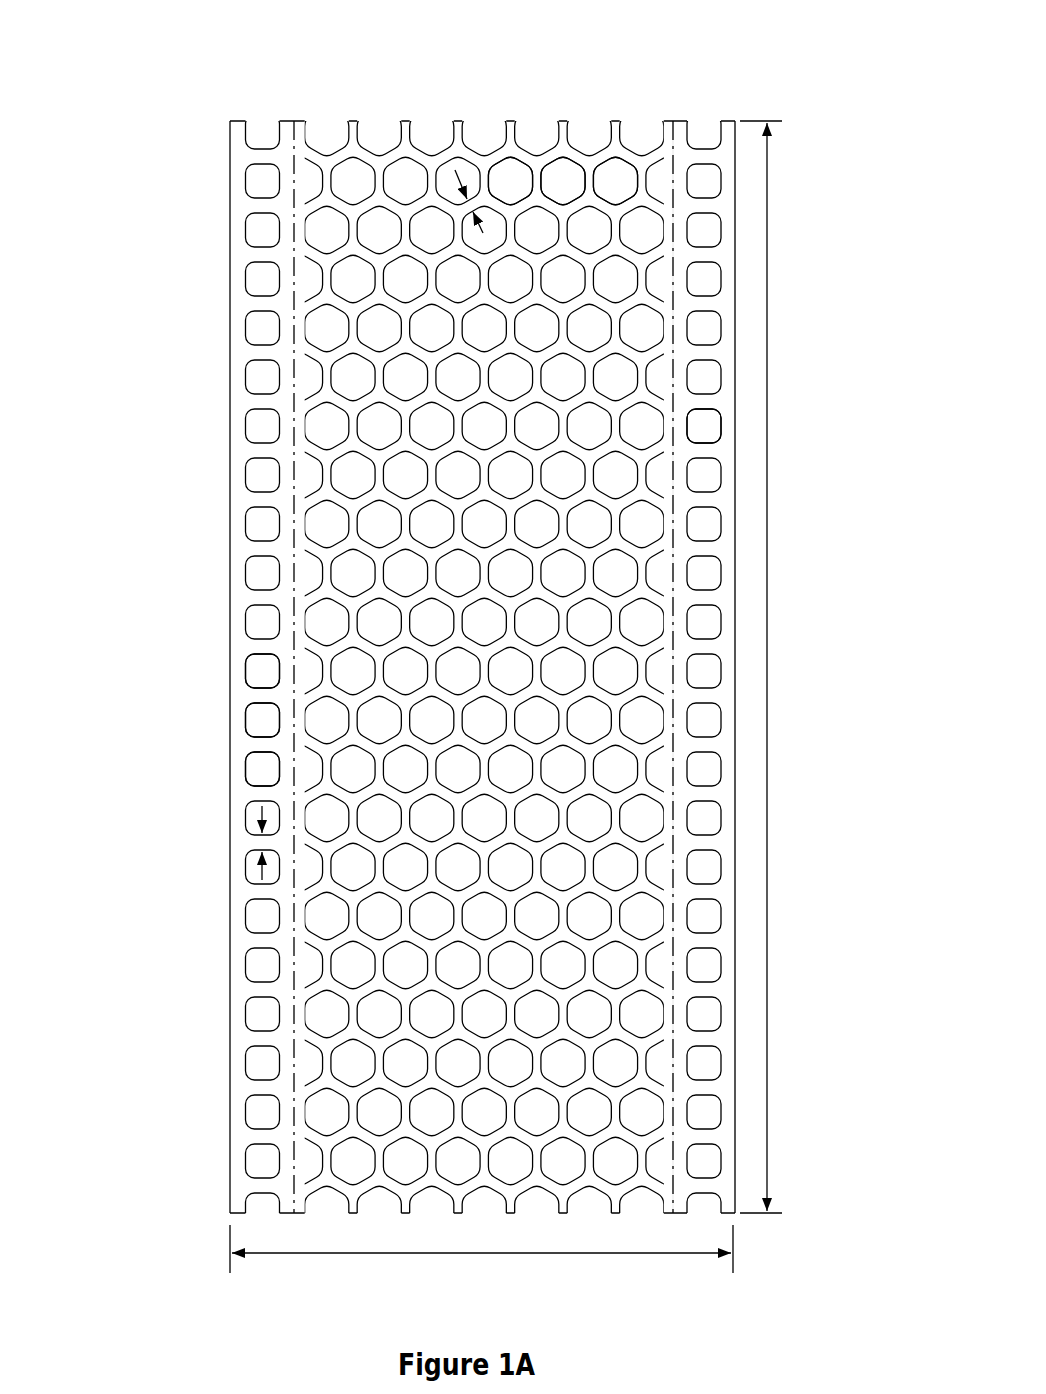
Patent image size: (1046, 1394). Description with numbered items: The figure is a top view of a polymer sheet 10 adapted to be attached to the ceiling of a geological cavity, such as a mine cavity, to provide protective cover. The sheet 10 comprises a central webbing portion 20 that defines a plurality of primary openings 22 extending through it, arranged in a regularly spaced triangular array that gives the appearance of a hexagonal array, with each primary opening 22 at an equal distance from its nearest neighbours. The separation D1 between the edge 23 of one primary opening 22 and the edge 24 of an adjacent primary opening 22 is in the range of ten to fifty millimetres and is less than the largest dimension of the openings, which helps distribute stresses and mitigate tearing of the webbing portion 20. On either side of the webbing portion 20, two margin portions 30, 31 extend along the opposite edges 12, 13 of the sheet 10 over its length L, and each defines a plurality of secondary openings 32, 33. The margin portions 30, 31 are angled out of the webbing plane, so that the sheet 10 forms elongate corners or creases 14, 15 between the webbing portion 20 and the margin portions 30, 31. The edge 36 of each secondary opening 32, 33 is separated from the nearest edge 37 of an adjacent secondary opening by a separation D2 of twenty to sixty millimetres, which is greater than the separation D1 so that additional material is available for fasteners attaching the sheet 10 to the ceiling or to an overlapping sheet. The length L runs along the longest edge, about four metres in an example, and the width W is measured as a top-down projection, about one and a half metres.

The sheet 10 is at (167, 70).
The edge 12 is at (231, 185).
The edge 13 is at (738, 219).
The crease 14 is at (293, 290).
The crease 15 is at (674, 121).
The webbing portion 20 is at (458, 93).
The primary opening 22 is at (612, 177).
The edge of primary opening 23 is at (531, 183).
The edge of adjacent primary opening 24 is at (543, 178).
The margin portion 30 is at (247, 547).
The margin portion 31 is at (723, 117).
The secondary opening 32 is at (257, 670).
The secondary opening 33 is at (703, 430).
The edge of secondary opening 36 is at (264, 738).
The edge of adjacent secondary opening 37 is at (256, 756).
The separation between primary openings D1 is at (455, 170).
The separation between secondary openings D2 is at (243, 867).
The length L is at (768, 667).
The width W is at (481, 1254).